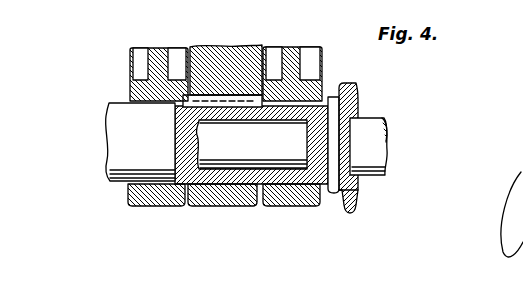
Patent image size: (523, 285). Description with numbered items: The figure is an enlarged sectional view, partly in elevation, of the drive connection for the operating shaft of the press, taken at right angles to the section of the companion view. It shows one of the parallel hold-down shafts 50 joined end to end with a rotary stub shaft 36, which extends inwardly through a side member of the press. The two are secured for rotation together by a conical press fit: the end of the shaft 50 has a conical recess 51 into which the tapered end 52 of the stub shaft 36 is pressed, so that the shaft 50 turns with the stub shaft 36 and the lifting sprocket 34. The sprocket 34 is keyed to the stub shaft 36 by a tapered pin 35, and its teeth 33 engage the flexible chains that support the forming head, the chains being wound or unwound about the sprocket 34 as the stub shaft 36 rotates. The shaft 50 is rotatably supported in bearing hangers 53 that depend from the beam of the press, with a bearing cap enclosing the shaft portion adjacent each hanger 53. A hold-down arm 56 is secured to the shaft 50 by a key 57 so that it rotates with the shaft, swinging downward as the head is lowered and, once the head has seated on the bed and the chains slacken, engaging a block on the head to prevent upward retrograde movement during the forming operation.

The teeth 33 is at (358, 82).
The lifting sprocket 34 is at (358, 105).
The tapered pin 35 is at (335, 97).
The rotary stub shaft 36 is at (364, 142).
The shaft 50 is at (108, 128).
The conical recess 51 is at (287, 172).
The tapered end 52 is at (240, 146).
The bearing hanger 53 is at (167, 52).
The hold-down arm 56 is at (208, 52).
The key 57 is at (236, 100).